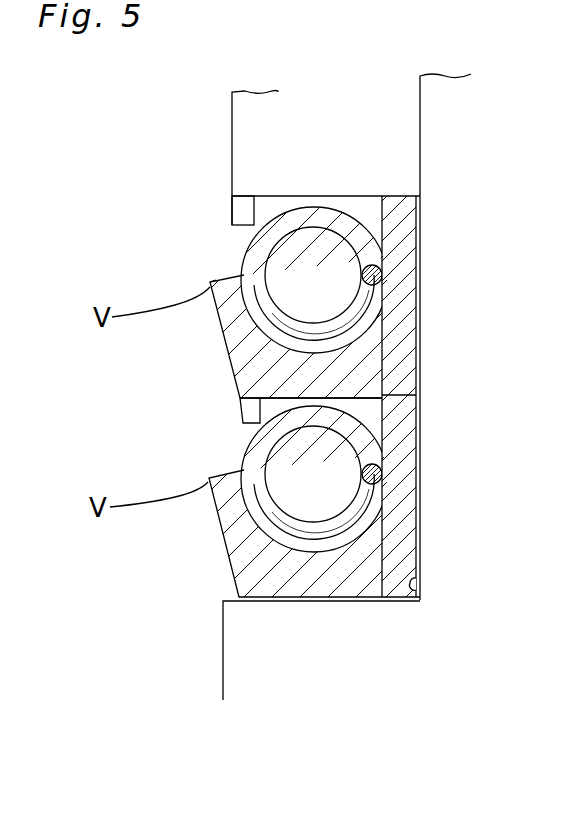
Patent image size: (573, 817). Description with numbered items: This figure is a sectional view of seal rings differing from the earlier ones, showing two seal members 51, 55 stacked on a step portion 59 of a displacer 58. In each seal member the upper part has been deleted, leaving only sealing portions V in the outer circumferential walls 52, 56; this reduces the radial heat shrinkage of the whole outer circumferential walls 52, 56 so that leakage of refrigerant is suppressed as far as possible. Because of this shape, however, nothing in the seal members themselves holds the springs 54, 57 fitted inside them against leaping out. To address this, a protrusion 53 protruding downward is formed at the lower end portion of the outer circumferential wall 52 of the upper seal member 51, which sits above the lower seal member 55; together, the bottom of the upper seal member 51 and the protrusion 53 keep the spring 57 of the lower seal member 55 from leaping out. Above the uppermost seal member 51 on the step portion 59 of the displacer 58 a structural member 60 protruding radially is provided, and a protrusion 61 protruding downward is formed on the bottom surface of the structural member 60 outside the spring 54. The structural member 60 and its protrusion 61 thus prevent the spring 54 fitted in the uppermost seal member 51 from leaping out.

The seal member 51 is at (410, 325).
The outer circumferential wall 52 is at (212, 284).
The protrusion 53 is at (240, 412).
The spring 54 is at (262, 316).
The seal member 55 is at (412, 497).
The outer circumferential wall 56 is at (217, 478).
The spring 57 is at (262, 512).
The displacer 58 is at (242, 640).
The step portion 59 is at (413, 581).
The structural member 60 is at (250, 136).
The protrusion 61 is at (245, 213).